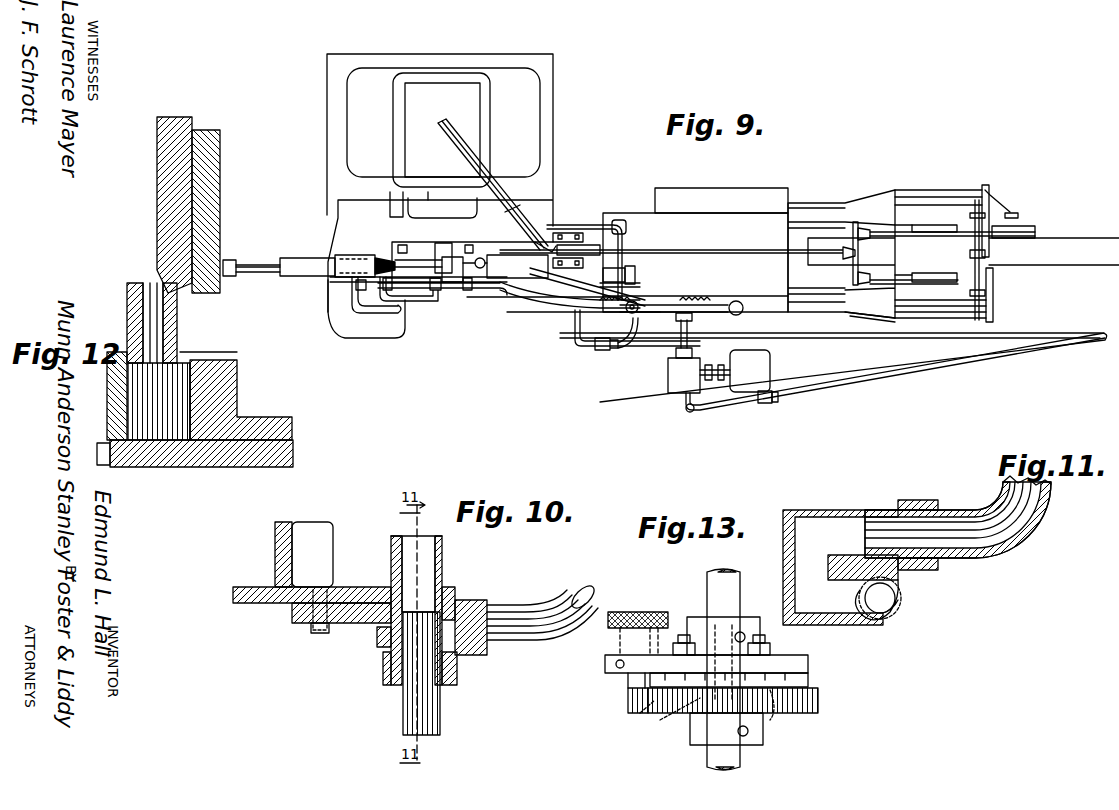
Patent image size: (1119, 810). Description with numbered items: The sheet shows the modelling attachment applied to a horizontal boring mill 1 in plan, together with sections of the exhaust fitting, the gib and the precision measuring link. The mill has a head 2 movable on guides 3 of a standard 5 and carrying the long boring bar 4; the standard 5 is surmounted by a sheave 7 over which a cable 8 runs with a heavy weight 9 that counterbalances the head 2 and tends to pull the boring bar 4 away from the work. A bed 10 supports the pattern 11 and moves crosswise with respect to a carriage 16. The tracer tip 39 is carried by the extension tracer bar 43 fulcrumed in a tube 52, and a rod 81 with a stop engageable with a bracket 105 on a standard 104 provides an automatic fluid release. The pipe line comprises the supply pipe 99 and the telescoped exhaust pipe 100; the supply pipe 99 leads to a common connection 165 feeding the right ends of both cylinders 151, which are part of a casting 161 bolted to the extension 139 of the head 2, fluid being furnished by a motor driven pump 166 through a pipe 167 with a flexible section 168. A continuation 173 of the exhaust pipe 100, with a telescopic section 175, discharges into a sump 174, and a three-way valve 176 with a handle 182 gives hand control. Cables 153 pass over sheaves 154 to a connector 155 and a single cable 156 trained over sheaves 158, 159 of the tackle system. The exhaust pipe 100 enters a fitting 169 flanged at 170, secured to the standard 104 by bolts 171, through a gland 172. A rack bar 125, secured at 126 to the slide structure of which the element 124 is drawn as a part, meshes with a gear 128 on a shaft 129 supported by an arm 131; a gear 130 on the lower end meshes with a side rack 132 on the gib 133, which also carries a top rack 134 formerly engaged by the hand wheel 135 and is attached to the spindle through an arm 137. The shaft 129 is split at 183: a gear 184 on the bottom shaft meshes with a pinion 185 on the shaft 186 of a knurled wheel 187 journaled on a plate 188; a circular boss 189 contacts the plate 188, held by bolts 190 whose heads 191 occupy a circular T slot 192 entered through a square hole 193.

In FIG. 9, the horizontal boring mill 1 is at (317, 148).
In FIG. 9, the head 2 is at (327, 318).
In FIG. 9, the guides 3 is at (490, 210).
In FIG. 9, the boring bar 4 is at (1057, 248).
In FIG. 9, the standard 5 is at (428, 192).
In FIG. 9, the sheave 7 is at (466, 151).
In FIG. 9, the cable 8 is at (505, 212).
In FIG. 9, the weight 9 is at (478, 103).
In FIG. 9, the bed 10 is at (165, 183).
In FIG. 9, the pattern 11 is at (216, 196).
In FIG. 9, the carriage 16 is at (345, 268).
In FIG. 9, the tracer tip 39 is at (230, 260).
In FIG. 9, the extension tracer bar 43 is at (252, 265).
In FIG. 9, the tube 52 is at (292, 258).
In FIG. 9, the rod 81 is at (478, 258).
In FIG. 9, the supply pipe 99 is at (390, 316).
In FIG. 9, the exhaust pipe 100 is at (367, 318).
In FIG. 10, the exhaust pipe 100 is at (442, 708).
In FIG. 11, the exhaust pipe 100 is at (962, 517).
In FIG. 10, the standard 104 is at (273, 536).
In FIG. 9, the bracket 105 is at (447, 257).
In FIG. 9, the slide 124 is at (510, 300).
In FIG. 9, the rack bar 125 is at (547, 303).
In FIG. 9, the rack bar attachment point 126 is at (458, 292).
In FIG. 9, the gear 128 is at (640, 330).
In FIG. 9, the shaft 129 is at (630, 314).
In FIG. 12, the shaft 129 is at (150, 303).
In FIG. 13, the shaft 129 is at (735, 557).
In FIG. 12, the gear 130 is at (135, 385).
In FIG. 9, the arm 131 is at (575, 298).
In FIG. 12, the rack 132 is at (190, 365).
In FIG. 12, the gib 133 is at (228, 374).
In FIG. 12, the rack 134 is at (233, 353).
In FIG. 9, the hand wheel 135 is at (578, 348).
In FIG. 12, the arm 137 is at (258, 425).
In FIG. 9, the extension 139 is at (722, 210).
In FIG. 9, the cylinders 151 is at (995, 310).
In FIG. 9, the cables 153 is at (868, 276).
In FIG. 9, the sheaves 154 is at (945, 285).
In FIG. 9, the connector 155 is at (854, 222).
In FIG. 9, the cable 156 is at (700, 238).
In FIG. 9, the sheave 158 is at (548, 233).
In FIG. 9, the sheave 159 is at (565, 245).
In FIG. 9, the casting 161 is at (803, 205).
In FIG. 9, the common connection 165 is at (1005, 265).
In FIG. 9, the pump 166 is at (676, 385).
In FIG. 9, the pipe 167 is at (742, 406).
In FIG. 9, the flexible section 168 is at (900, 372).
In FIG. 9, the fitting 169 is at (435, 252).
In FIG. 10, the fitting 169 is at (445, 585).
In FIG. 11, the fitting 169 is at (810, 510).
In FIG. 10, the flange 170 is at (352, 623).
In FIG. 10, the bolts 171 is at (315, 630).
In FIG. 10, the gland 172 is at (385, 665).
In FIG. 11, the gland 172 is at (915, 500).
In FIG. 9, the continuation 173 is at (620, 225).
In FIG. 10, the continuation 173 is at (545, 640).
In FIG. 11, the continuation 173 is at (880, 612).
In FIG. 9, the sump 174 is at (796, 314).
In FIG. 9, the telescopic section 175 is at (737, 300).
In FIG. 9, the three-way valve 176 is at (625, 274).
In FIG. 9, the handle 182 is at (635, 281).
In FIG. 13, the split 183 is at (700, 742).
In FIG. 13, the gear 184 is at (830, 706).
In FIG. 13, the pinion 185 is at (628, 702).
In FIG. 13, the shaft 186 is at (628, 680).
In FIG. 13, the knurled wheel 187 is at (630, 600).
In FIG. 13, the plate 188 is at (822, 660).
In FIG. 13, the circular boss 189 is at (828, 678).
In FIG. 13, the bolts 190 is at (770, 642).
In FIG. 13, the heads 191 is at (650, 712).
In FIG. 13, the circular T slot 192 is at (680, 715).
In FIG. 13, the square hole 193 is at (772, 720).